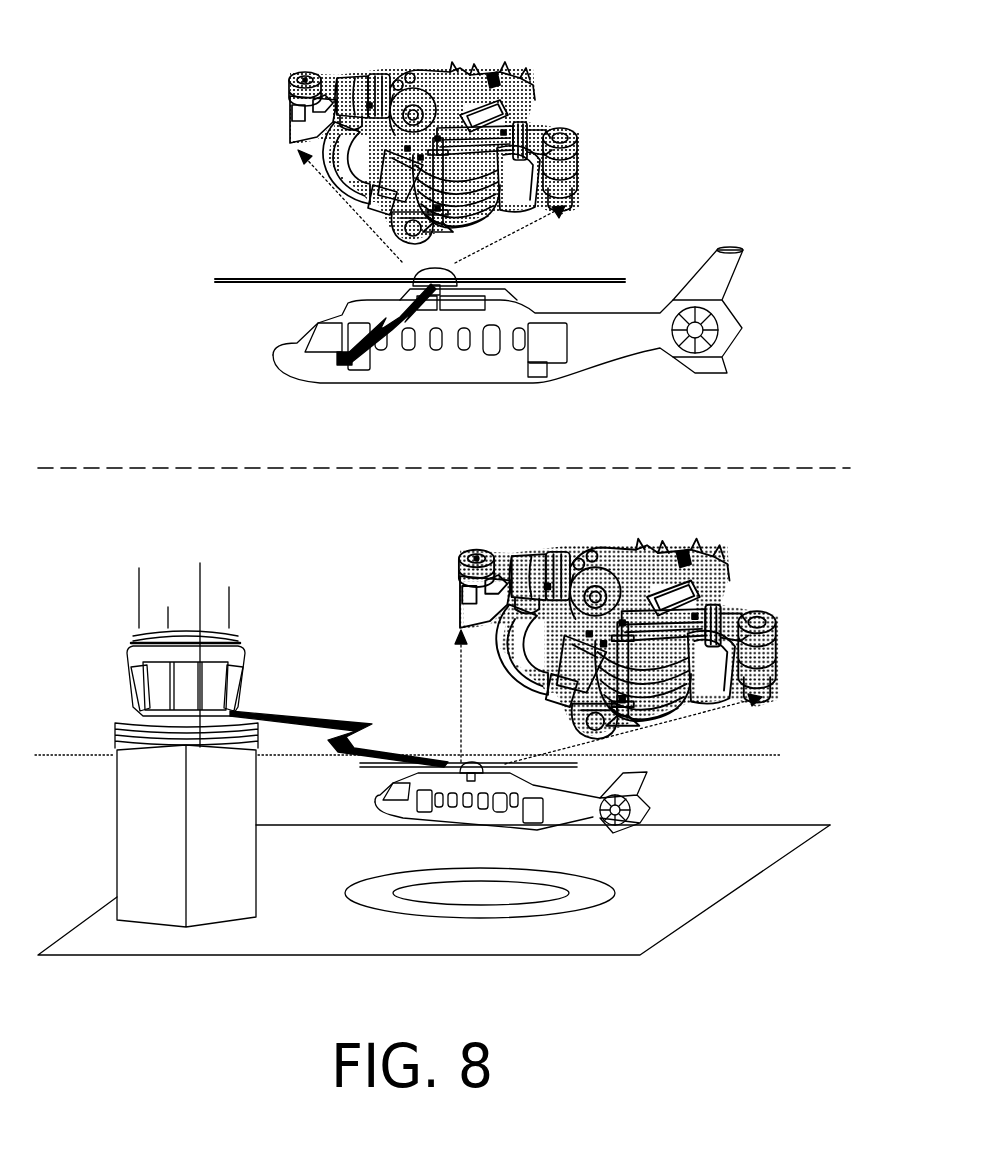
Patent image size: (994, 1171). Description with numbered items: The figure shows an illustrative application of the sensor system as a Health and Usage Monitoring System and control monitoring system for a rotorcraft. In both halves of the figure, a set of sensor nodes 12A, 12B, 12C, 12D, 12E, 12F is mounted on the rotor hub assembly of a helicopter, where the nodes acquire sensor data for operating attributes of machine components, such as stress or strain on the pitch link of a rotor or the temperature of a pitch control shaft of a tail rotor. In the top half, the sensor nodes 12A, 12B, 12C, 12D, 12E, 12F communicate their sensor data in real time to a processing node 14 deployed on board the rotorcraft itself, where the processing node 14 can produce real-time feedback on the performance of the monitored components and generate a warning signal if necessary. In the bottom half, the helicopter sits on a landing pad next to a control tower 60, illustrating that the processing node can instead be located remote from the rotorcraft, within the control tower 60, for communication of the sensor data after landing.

The sensor node 12A is at (441, 314).
The sensor node 12B is at (503, 324).
The sensor node 12C is at (602, 355).
The sensor node 12D is at (438, 409).
The sensor node 12E is at (456, 436).
The sensor node 12F is at (561, 473).
The processing node 14 is at (343, 366).
The control tower 60 is at (167, 843).